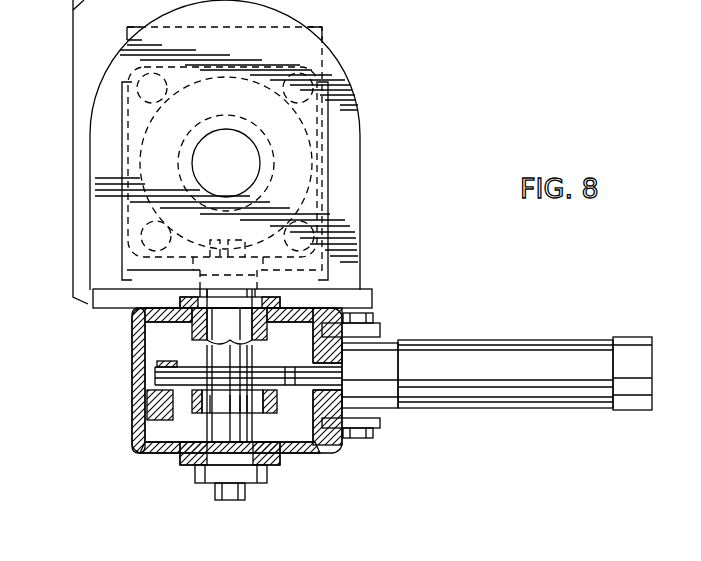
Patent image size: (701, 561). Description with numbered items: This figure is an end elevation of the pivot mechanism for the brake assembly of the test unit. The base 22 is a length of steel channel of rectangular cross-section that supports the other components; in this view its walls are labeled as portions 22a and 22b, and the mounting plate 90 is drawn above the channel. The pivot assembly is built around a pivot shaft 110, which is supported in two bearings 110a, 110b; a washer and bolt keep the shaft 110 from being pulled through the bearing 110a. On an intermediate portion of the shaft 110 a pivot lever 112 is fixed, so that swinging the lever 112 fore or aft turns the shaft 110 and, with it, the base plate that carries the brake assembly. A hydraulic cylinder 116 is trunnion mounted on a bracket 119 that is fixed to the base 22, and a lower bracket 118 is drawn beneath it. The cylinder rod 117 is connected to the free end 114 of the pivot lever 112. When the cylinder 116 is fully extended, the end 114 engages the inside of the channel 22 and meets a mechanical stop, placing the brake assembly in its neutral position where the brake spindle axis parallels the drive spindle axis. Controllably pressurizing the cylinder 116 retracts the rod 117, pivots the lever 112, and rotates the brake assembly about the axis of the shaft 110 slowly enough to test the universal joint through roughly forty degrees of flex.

The mounting plate 90 is at (72, 148).
The base 22 is at (135, 358).
The housing lower bearing block 22a is at (140, 405).
The housing side wall 22b is at (325, 447).
The pivot shaft 110 is at (230, 457).
The bearing 110a is at (196, 432).
The bearing 110b is at (180, 302).
The pivot lever 112 is at (192, 422).
The free end of the pivot arm 114 is at (140, 448).
The hydraulic cylinder 116 is at (500, 383).
The cylinder rod 117 is at (290, 385).
The lower bracket nut 118 is at (368, 433).
The bracket 119 is at (377, 330).